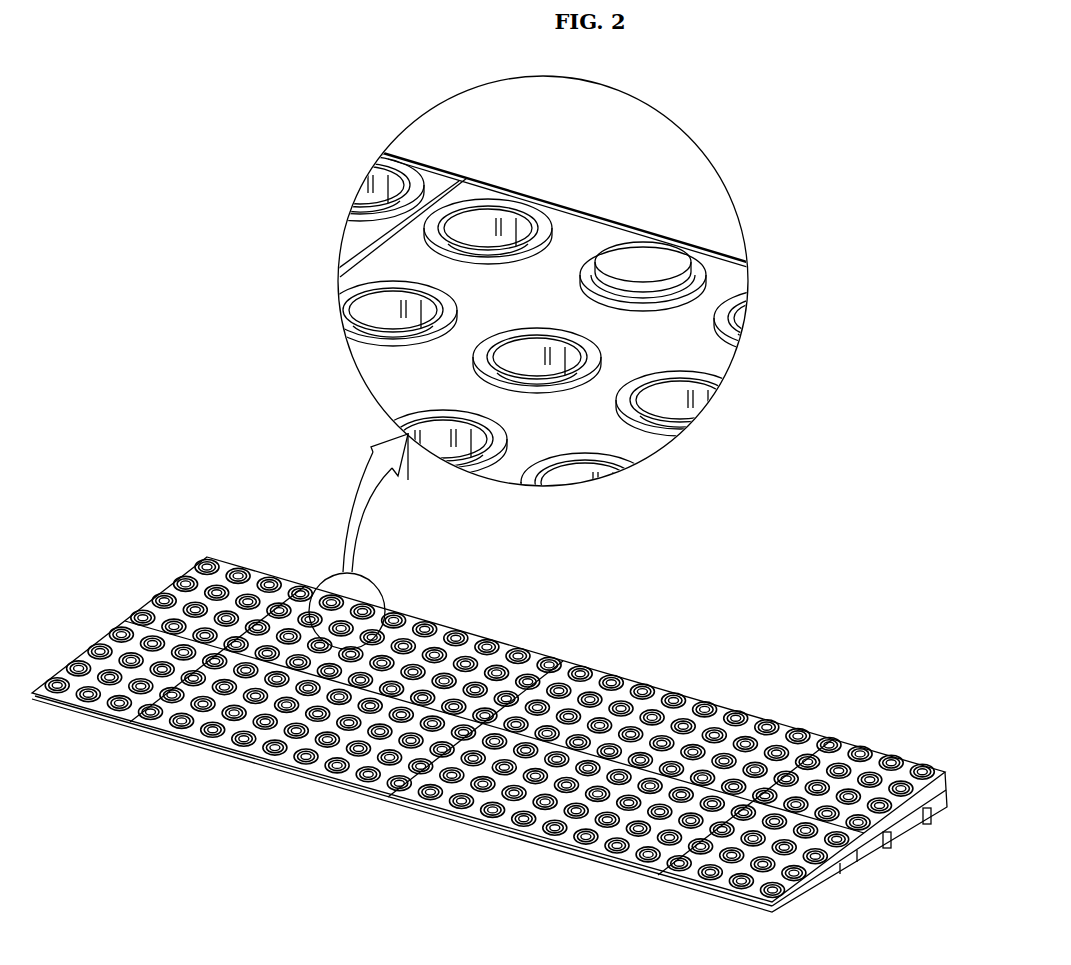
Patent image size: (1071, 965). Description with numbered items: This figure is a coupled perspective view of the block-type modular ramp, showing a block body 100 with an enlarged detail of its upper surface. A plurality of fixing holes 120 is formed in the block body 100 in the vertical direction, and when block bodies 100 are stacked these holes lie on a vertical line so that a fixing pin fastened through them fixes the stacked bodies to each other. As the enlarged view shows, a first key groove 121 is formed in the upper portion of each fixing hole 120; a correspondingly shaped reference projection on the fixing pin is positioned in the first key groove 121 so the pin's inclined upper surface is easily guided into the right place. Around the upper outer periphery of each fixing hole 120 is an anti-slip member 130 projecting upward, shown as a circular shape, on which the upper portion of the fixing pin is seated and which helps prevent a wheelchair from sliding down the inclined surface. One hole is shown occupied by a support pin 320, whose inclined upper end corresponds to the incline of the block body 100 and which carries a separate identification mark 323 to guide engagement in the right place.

The block body 100 is at (606, 658).
The fixing hole 120 is at (403, 182).
The first key groove 121 is at (490, 242).
The anti-slip member 130 is at (408, 425).
The support pin 320 is at (679, 215).
The identification mark 323 is at (665, 248).